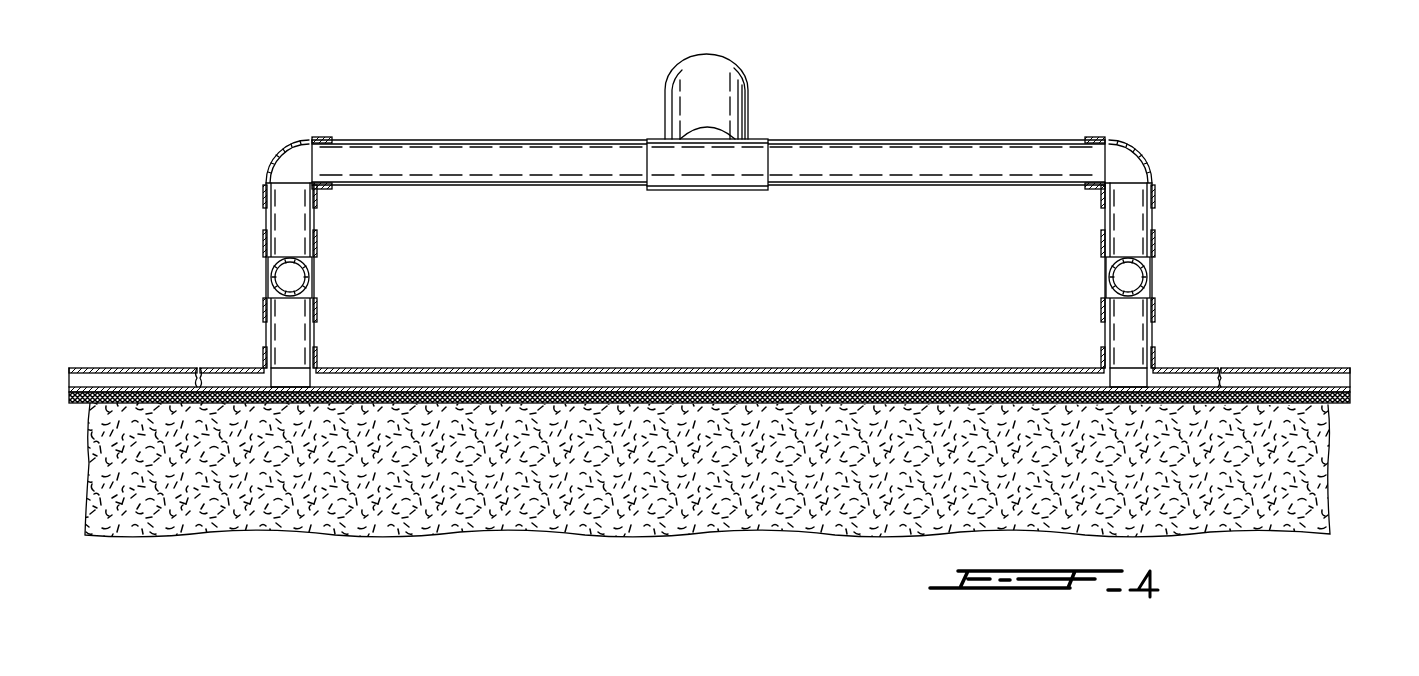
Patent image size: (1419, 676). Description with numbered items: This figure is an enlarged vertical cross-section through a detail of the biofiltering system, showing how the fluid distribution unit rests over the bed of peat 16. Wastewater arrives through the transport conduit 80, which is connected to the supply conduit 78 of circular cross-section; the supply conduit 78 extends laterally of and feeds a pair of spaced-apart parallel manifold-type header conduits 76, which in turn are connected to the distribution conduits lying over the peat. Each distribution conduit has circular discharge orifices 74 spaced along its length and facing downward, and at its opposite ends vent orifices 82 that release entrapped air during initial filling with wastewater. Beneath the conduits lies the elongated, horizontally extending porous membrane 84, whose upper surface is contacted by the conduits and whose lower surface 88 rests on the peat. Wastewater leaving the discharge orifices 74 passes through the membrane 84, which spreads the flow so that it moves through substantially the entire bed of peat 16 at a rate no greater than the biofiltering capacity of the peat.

The bed of peat 16 is at (722, 482).
The discharge orifices 74 is at (113, 378).
The header conduits 76 is at (272, 268).
The supply conduit 78 is at (951, 138).
The transport conduit 80 is at (734, 97).
The vent orifices 82 is at (110, 372).
The porous membrane 84 is at (1354, 387).
The lower surface 88 is at (1340, 402).